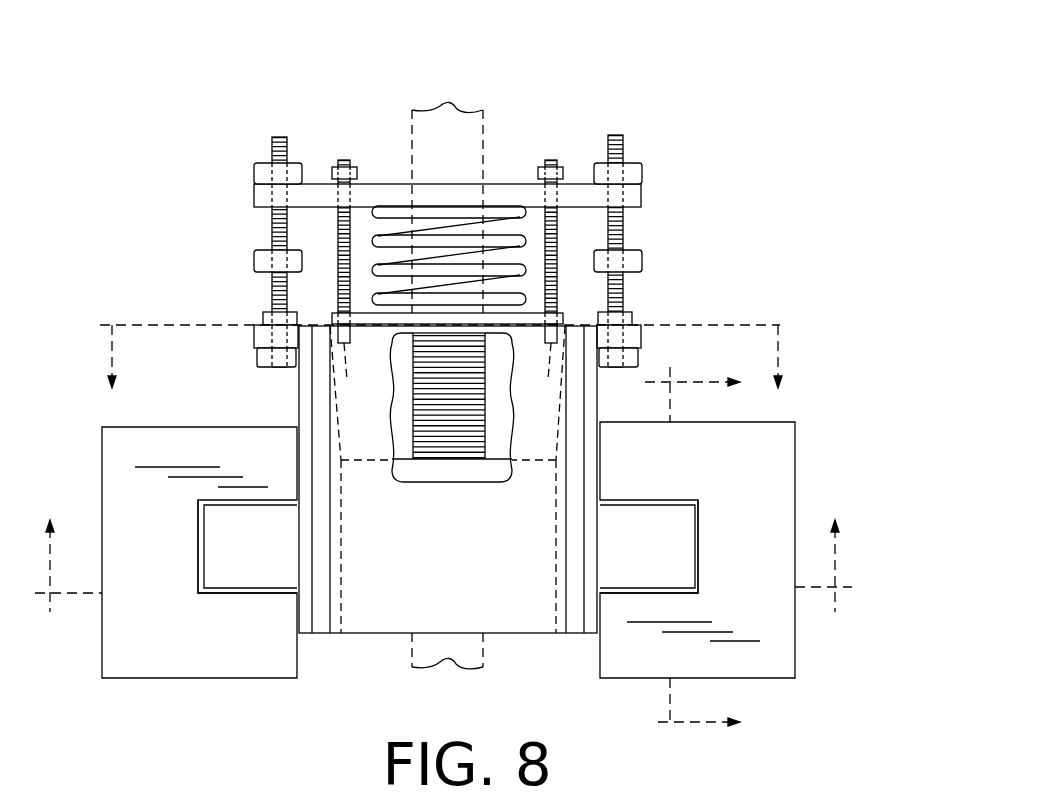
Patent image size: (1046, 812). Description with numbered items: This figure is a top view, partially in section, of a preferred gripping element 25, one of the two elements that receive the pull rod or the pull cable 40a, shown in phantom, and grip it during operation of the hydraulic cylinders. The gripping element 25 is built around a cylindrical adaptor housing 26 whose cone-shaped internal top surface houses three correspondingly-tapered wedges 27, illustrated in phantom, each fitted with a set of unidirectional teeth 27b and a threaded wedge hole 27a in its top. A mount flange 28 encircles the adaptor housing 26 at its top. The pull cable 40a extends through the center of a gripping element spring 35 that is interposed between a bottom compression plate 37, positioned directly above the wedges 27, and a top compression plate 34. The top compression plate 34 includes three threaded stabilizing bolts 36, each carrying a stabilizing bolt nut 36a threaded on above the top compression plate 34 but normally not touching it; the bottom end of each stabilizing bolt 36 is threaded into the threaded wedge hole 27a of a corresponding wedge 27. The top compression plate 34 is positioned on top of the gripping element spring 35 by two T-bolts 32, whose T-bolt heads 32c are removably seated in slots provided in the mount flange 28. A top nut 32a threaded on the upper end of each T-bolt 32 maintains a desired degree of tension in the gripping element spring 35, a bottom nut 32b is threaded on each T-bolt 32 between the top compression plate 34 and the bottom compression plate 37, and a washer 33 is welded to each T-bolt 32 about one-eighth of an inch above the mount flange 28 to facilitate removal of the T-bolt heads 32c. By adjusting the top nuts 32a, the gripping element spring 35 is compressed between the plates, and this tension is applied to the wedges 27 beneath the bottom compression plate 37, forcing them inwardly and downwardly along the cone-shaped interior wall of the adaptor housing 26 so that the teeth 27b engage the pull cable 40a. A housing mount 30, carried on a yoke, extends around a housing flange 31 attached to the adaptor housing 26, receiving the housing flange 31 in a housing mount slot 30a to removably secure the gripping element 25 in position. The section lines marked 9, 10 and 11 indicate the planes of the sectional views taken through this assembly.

The gripping element 25 is at (676, 100).
The adaptor housing 26 is at (373, 645).
The wedge 27 is at (404, 470).
The threaded wedge hole 27a is at (340, 448).
The unidirectional teeth 27b is at (459, 422).
The mount flange 28 is at (258, 335).
The housing mount 30 is at (755, 448).
The housing mount slot 30a is at (218, 596).
The housing flange 31 is at (270, 562).
The T-bolt 32 is at (272, 140).
The top nut 32a is at (258, 170).
The bottom nut 32b is at (258, 260).
The T-bolt head 32c is at (260, 362).
The washer 33 is at (262, 314).
The top compression plate 34 is at (505, 190).
The gripping element spring 35 is at (398, 238).
The stabilizing bolt 36 is at (345, 336).
The stabilizing bolt nut 36a is at (340, 165).
The bottom compression plate 37 is at (324, 302).
The pull cable 40a is at (470, 100).
The section line 9 is at (447, 340).
The section line 10 is at (449, 571).
The section line 11 is at (688, 553).